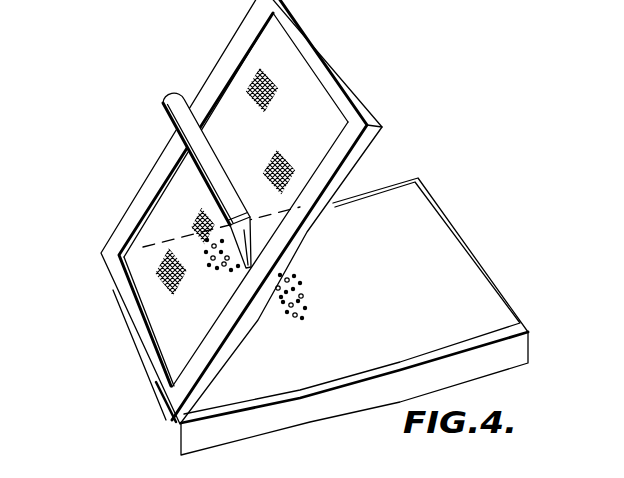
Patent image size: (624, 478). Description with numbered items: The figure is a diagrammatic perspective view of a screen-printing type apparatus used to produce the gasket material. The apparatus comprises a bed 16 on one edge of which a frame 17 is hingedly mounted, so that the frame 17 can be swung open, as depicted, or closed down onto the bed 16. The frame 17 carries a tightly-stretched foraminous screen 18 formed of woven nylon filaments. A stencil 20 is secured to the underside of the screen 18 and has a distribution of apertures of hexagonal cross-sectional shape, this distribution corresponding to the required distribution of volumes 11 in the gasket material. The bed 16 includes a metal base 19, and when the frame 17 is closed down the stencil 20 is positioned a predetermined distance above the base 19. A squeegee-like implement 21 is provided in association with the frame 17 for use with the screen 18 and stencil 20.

The volumes 11 is at (303, 305).
The bed 16 is at (512, 350).
The frame 17 is at (368, 117).
The foraminous screen 18 is at (313, 100).
The metal base 19 is at (510, 307).
The stencil 20 is at (222, 285).
The squeegee-like implement 21 is at (165, 103).